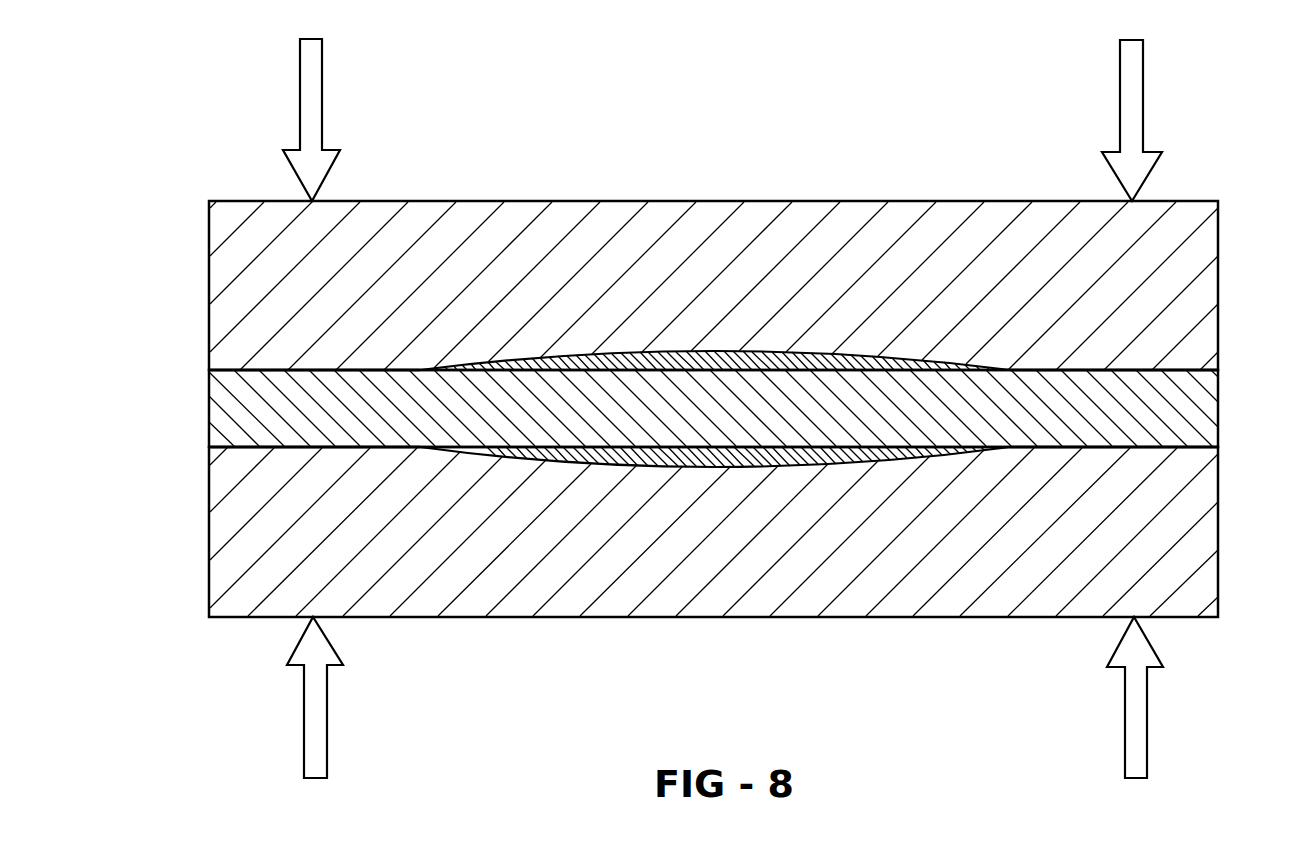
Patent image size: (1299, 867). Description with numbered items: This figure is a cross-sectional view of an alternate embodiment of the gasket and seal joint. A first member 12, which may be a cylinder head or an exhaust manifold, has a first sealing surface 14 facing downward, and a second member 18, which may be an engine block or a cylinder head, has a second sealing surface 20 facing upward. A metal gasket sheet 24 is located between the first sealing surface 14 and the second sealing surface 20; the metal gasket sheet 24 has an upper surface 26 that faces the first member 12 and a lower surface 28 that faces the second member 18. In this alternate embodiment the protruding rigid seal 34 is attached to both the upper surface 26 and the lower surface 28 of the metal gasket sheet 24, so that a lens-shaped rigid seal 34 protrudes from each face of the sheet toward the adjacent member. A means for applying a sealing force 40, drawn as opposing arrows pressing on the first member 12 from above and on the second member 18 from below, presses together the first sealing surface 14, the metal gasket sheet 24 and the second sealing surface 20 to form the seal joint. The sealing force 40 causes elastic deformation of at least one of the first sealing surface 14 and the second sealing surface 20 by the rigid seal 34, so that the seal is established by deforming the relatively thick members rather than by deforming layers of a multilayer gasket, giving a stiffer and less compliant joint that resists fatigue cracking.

The first member 12 is at (577, 235).
The second member 18 is at (466, 600).
The metal gasket sheet 24 is at (1195, 420).
The first sealing surface 14 is at (241, 376).
The second sealing surface 20 is at (250, 445).
The upper surface 26 is at (1143, 370).
The lower surface 28 is at (1150, 448).
The rigid seal 34 is at (763, 358).
The means for applying a sealing force 40 is at (322, 73).